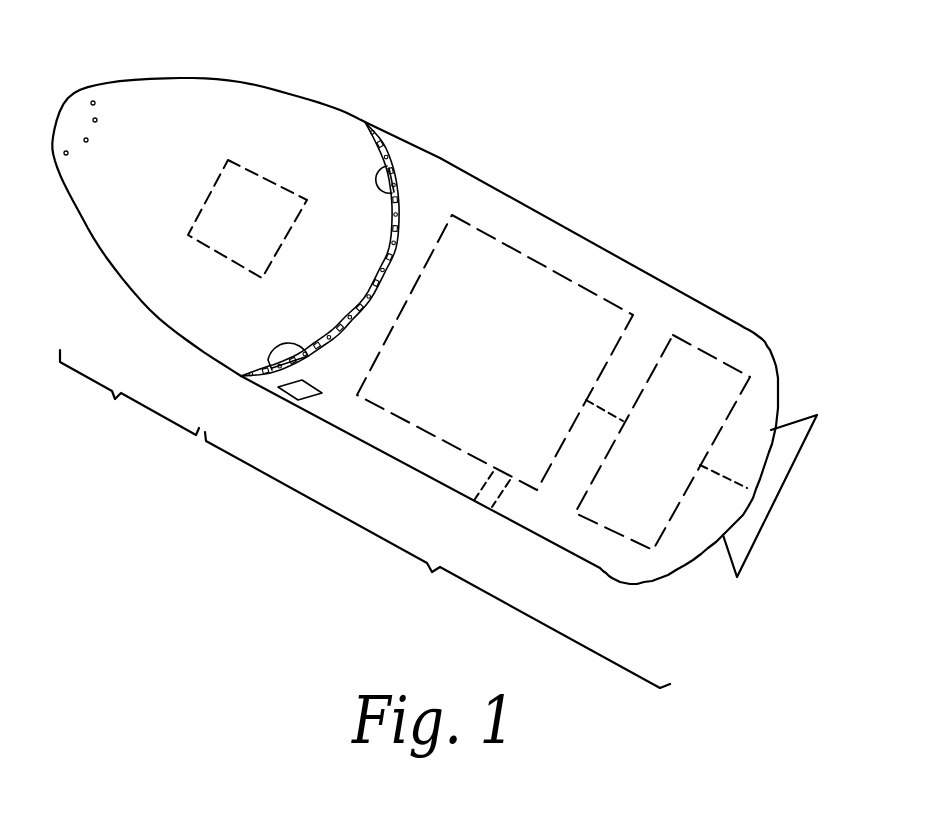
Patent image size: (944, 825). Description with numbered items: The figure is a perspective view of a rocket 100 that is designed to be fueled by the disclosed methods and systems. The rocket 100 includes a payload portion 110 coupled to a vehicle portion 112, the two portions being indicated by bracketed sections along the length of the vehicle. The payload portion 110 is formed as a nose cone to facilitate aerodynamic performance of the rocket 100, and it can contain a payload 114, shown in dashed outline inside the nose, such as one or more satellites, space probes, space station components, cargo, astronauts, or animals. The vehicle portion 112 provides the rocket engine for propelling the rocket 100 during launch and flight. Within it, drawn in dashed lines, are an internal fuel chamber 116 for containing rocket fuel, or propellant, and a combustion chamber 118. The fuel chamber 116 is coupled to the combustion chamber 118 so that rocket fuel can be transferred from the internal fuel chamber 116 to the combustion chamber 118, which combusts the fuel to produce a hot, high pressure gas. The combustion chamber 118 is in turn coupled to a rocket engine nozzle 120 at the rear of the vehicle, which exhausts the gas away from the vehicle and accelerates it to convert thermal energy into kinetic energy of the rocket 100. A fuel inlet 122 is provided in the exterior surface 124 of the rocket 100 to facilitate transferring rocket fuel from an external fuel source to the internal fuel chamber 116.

The rocket 100 is at (447, 301).
The payload portion 110 is at (129, 392).
The vehicle portion 112 is at (437, 560).
The payload 114 is at (262, 177).
The internal fuel chamber 116 is at (495, 352).
The combustion chamber 118 is at (662, 442).
The rocket engine nozzle 120 is at (757, 539).
The fuel inlet 122 is at (492, 508).
The exterior surface 124 is at (525, 206).